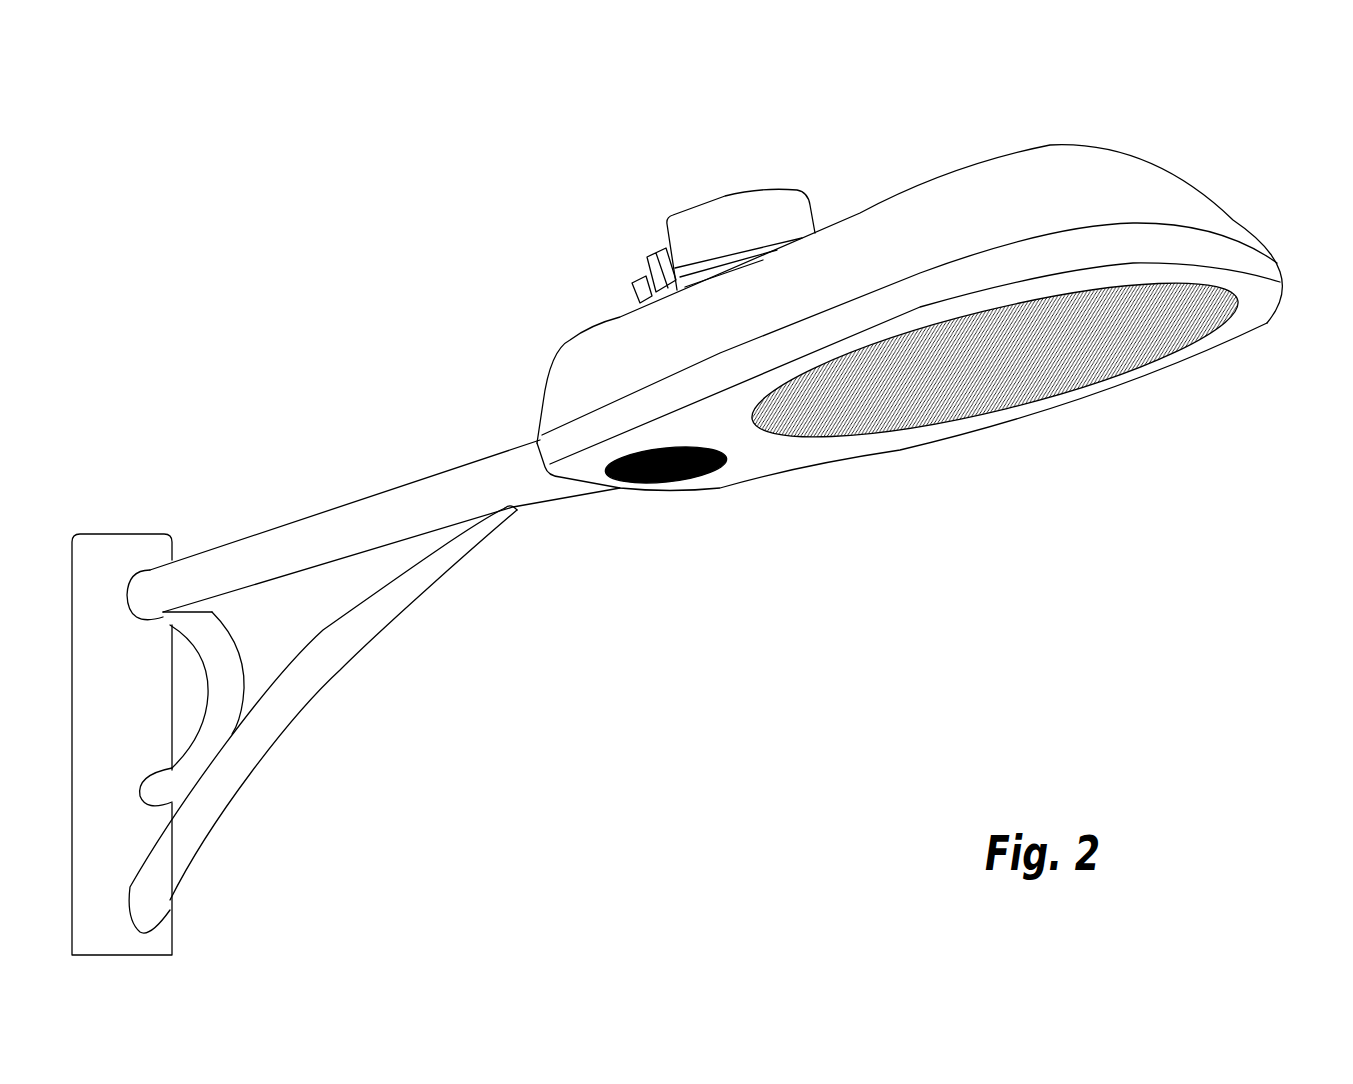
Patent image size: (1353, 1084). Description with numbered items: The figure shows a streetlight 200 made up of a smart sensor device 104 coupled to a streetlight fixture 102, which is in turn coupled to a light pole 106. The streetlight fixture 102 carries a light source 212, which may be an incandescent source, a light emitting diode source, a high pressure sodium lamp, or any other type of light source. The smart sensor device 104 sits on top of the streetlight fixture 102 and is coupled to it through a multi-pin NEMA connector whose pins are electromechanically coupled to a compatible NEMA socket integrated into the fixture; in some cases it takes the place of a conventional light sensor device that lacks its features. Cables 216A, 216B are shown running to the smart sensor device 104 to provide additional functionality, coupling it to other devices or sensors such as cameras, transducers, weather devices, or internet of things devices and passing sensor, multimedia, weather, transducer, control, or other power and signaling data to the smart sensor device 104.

The streetlight 200 is at (1230, 82).
The streetlight fixture 102 is at (1030, 182).
The smart sensor device 104 is at (716, 222).
The light pole 106 is at (117, 557).
The light source 212 is at (1013, 400).
The clip 216A is at (647, 257).
The clip 216B is at (634, 286).